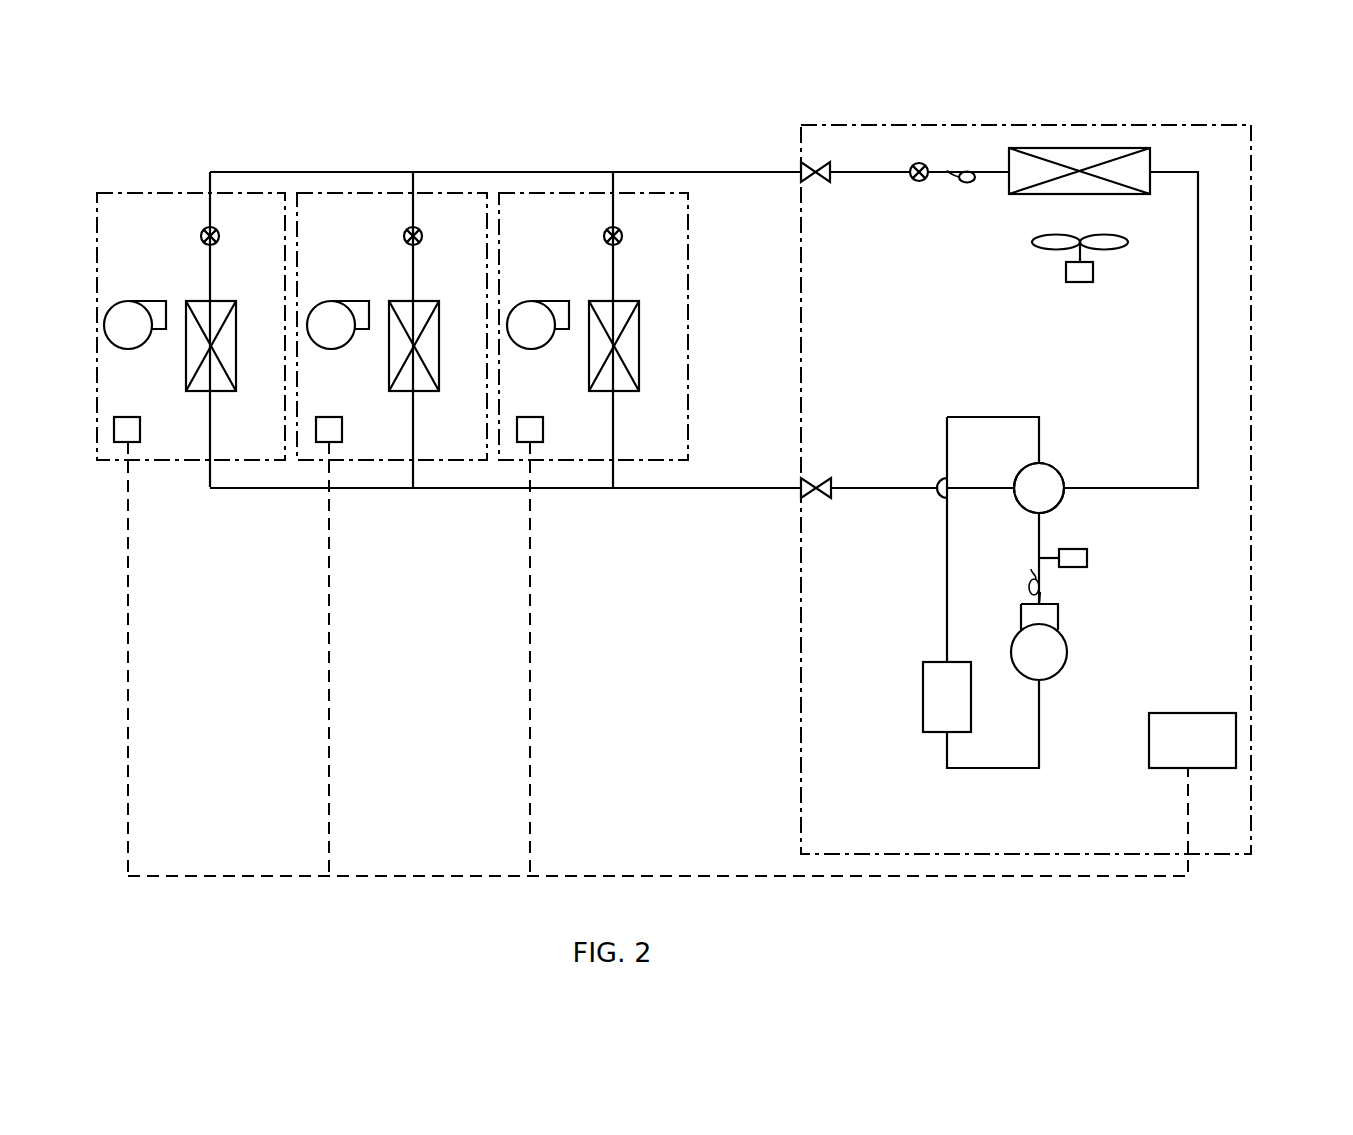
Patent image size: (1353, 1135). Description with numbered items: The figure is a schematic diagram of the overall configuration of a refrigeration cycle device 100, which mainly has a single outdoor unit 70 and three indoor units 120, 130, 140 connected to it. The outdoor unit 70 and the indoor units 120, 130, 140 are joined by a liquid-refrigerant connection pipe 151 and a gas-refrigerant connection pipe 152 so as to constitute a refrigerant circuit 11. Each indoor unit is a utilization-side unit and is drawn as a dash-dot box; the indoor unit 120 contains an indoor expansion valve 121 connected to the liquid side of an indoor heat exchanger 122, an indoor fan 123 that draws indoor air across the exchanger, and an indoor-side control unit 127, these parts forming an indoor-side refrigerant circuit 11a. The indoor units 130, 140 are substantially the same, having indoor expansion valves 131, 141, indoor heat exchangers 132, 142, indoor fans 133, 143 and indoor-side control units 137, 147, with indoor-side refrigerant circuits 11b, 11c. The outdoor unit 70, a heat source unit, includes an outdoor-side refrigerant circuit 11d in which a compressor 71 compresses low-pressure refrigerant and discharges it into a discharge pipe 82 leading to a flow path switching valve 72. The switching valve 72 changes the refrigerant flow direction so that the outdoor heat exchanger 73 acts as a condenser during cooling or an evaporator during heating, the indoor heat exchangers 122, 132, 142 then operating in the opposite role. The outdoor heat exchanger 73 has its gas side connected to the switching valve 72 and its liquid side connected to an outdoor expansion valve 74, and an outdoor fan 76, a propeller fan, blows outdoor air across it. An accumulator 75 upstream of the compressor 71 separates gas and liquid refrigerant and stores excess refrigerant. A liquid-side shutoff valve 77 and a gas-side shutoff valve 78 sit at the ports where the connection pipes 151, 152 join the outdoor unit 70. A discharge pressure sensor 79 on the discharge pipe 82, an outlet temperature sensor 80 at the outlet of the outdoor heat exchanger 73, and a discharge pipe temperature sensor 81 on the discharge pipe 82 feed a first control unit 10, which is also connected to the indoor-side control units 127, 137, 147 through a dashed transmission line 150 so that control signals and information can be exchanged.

The refrigeration cycle device 100 is at (1243, 108).
The outdoor unit 70 is at (1208, 125).
The refrigerant circuit 11 is at (780, 148).
The indoor-side refrigerant circuit 11a is at (190, 213).
The indoor-side refrigerant circuit 11b is at (395, 212).
The indoor-side refrigerant circuit 11c is at (595, 212).
The outdoor-side refrigerant circuit 11d is at (1180, 142).
The indoor unit 120 is at (271, 192).
The indoor unit 130 is at (479, 192).
The indoor unit 140 is at (661, 192).
The indoor expansion valve 121 is at (219, 234).
The indoor heat exchanger 122 is at (222, 301).
The indoor fan 123 is at (139, 300).
The indoor-side control unit 127 is at (120, 442).
The indoor expansion valve 131 is at (422, 234).
The indoor heat exchanger 132 is at (425, 301).
The indoor fan 133 is at (332, 300).
The indoor-side control unit 137 is at (322, 442).
The indoor expansion valve 141 is at (622, 234).
The indoor heat exchanger 142 is at (625, 301).
The indoor fan 143 is at (534, 300).
The indoor-side control unit 147 is at (522, 442).
The transmission line 150 is at (550, 850).
The liquid-refrigerant connection pipe 151 is at (714, 172).
The gas-refrigerant connection pipe 152 is at (688, 490).
The first control unit 10 is at (1206, 768).
The compressor 71 is at (1020, 614).
The flow path switching valve 72 is at (1020, 470).
The outdoor heat exchanger 73 is at (1100, 148).
The outdoor expansion valve 74 is at (915, 181).
The accumulator 75 is at (923, 683).
The outdoor fan 76 is at (1026, 250).
The liquid-side shutoff valve 77 is at (825, 162).
The gas-side shutoff valve 78 is at (820, 498).
The discharge pressure sensor 79 is at (1087, 549).
The outlet temperature sensor 80 is at (967, 182).
The discharge pipe temperature sensor 81 is at (1029, 585).
The discharge pipe 82 is at (1040, 592).